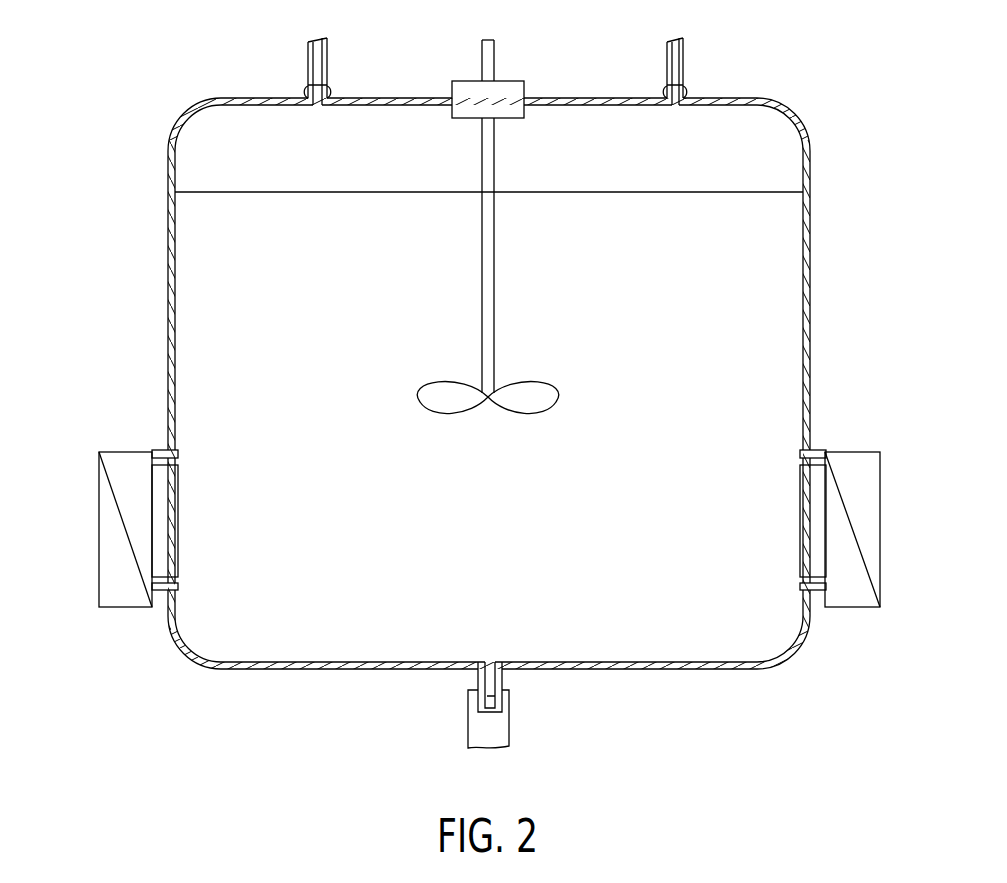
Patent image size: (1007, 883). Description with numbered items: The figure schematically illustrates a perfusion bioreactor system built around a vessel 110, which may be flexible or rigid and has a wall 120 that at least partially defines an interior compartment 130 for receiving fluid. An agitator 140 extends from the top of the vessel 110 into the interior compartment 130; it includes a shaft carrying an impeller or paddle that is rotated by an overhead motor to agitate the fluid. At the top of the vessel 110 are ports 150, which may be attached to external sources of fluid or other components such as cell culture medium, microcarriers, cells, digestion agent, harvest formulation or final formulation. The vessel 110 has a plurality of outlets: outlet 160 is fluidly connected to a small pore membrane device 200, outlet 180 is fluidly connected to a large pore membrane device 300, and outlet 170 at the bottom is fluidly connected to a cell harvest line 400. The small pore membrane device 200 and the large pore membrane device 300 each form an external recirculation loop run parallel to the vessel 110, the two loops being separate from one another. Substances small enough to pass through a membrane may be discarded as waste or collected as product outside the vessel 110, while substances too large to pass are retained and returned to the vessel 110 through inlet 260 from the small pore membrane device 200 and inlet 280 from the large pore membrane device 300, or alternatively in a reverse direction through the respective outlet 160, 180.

The vessel 110 is at (135, 166).
The wall 120 is at (170, 258).
The interior compartment 130 is at (790, 266).
The agitator 140 is at (507, 318).
The port 150 is at (306, 90).
The outlet 160 is at (815, 590).
The outlet 170 is at (477, 675).
The outlet 180 is at (162, 590).
The small pore membrane device 200 is at (890, 491).
The inlet 260 is at (815, 451).
The inlet 280 is at (161, 451).
The large pore membrane device 300 is at (90, 488).
The cell harvest line 400 is at (508, 715).